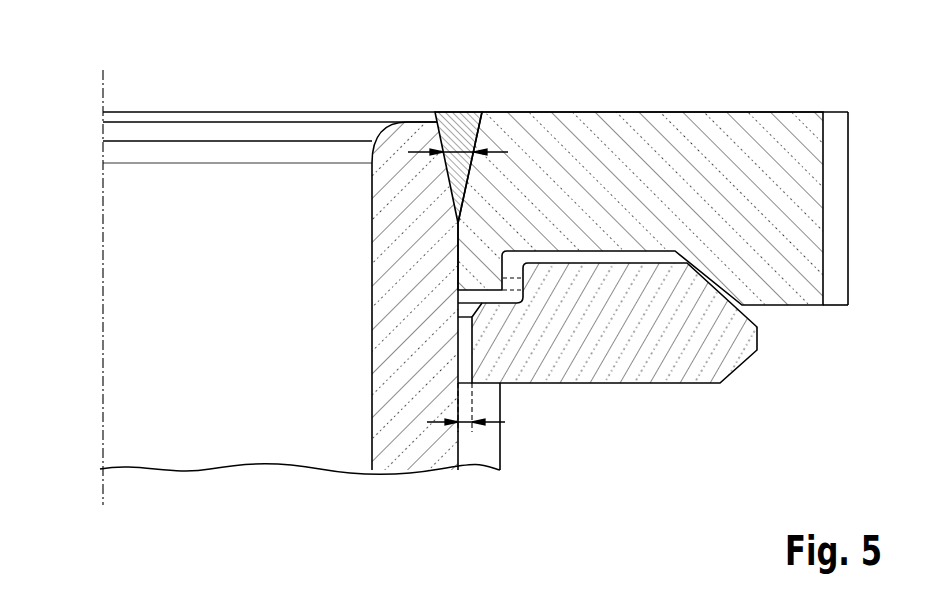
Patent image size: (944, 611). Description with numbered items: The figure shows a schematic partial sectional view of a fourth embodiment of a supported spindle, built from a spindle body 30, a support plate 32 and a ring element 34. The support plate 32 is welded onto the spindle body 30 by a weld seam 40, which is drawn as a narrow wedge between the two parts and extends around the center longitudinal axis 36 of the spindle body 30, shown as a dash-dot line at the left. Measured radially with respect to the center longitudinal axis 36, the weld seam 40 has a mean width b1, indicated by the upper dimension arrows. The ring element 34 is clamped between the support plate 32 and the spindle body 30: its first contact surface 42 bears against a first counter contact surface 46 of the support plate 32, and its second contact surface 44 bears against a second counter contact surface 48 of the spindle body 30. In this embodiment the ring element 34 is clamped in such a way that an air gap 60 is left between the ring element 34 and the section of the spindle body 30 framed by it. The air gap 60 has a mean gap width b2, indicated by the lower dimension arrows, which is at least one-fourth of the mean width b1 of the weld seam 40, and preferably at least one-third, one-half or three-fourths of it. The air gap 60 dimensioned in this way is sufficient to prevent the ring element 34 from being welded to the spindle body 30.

The spindle body 30 is at (403, 398).
The support plate 32 is at (787, 207).
The ring element 34 is at (635, 343).
The center longitudinal axis 36 is at (103, 257).
The weld seam 40 is at (458, 138).
The first contact surface 42 is at (708, 252).
The second contact surface 44 is at (478, 363).
The first counter contact surface 46 is at (698, 298).
The second counter contact surface 48 is at (472, 405).
The air gap 60 is at (490, 426).
The mean width of weld seam b1 is at (420, 150).
The mean gap width b2 is at (427, 424).